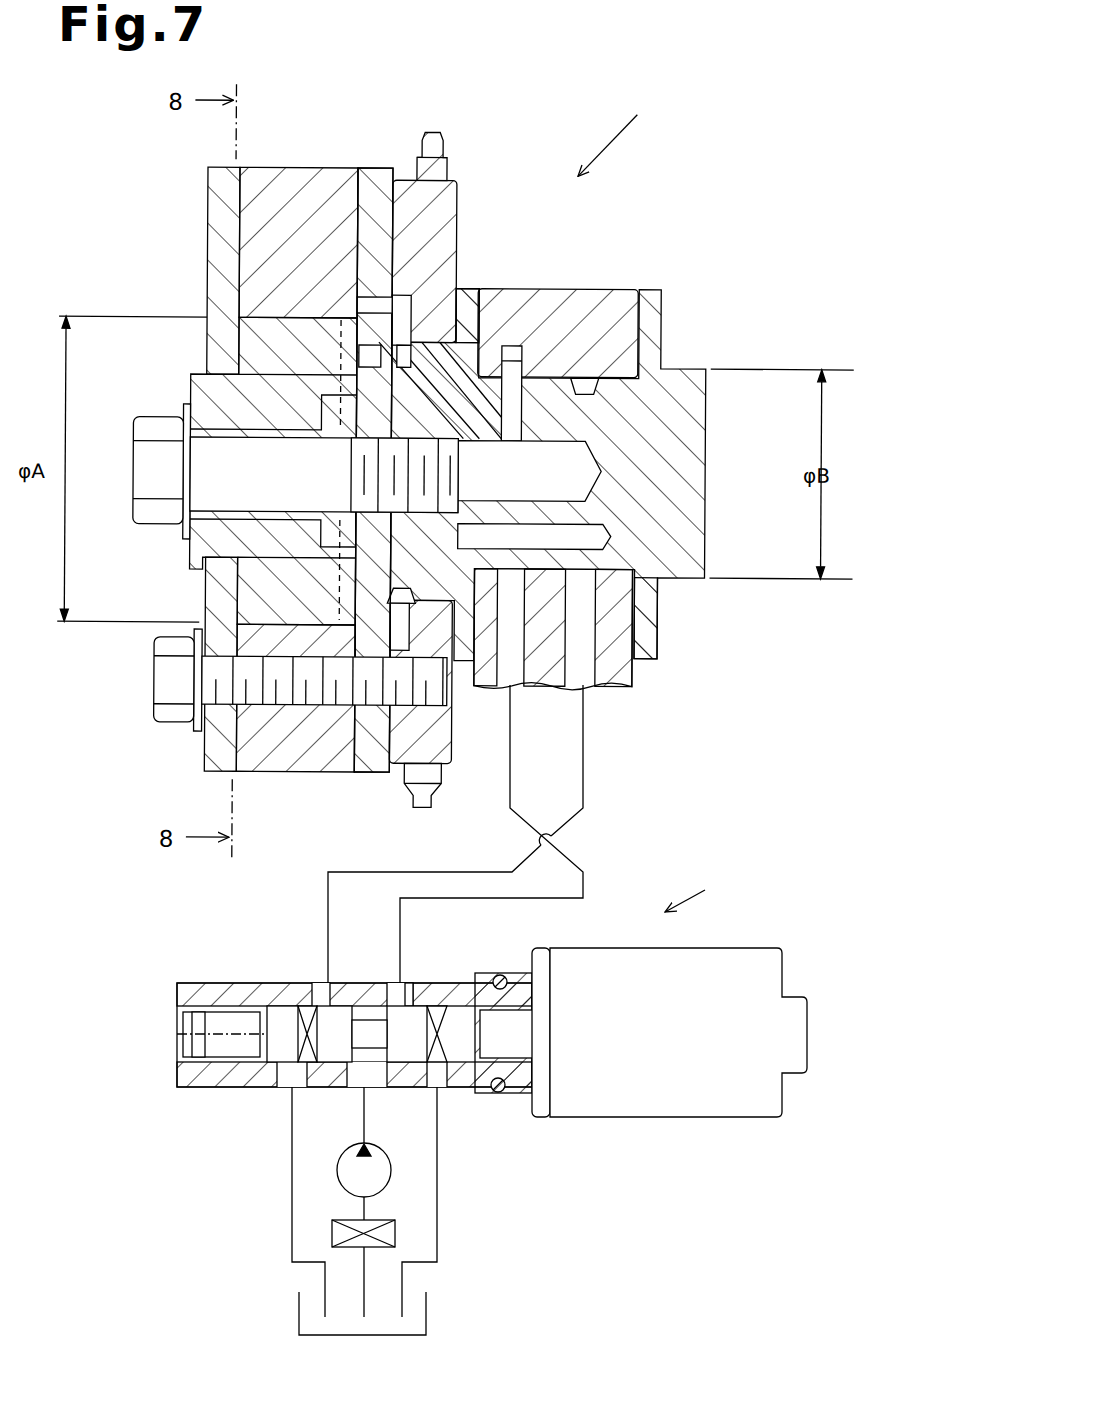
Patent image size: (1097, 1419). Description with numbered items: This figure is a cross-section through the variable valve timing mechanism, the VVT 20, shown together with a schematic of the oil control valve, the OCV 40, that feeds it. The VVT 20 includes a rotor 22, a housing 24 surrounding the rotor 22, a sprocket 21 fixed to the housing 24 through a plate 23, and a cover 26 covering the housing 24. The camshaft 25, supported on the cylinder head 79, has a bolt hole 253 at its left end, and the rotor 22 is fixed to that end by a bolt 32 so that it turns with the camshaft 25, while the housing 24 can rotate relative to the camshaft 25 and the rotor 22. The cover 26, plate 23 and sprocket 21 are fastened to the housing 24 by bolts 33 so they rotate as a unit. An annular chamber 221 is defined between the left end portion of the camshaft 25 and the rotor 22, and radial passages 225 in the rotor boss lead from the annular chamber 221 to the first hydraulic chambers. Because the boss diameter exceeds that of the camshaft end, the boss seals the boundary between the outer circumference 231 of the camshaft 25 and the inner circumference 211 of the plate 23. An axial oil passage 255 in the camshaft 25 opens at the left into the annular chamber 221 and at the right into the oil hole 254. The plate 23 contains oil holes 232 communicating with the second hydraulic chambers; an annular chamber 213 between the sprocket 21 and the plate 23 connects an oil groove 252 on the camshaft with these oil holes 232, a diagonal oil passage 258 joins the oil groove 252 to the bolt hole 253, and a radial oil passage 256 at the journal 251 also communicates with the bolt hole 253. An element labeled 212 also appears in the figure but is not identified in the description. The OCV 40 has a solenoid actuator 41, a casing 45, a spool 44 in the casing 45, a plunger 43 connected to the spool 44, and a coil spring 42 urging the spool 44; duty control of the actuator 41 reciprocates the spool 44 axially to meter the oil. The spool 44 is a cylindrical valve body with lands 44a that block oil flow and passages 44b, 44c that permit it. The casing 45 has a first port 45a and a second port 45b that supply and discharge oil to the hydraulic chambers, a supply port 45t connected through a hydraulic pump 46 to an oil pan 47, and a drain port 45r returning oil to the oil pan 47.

The VVT 20 is at (686, 118).
The sprocket 21 is at (458, 190).
The inner circumference of the plate 211 is at (425, 595).
The projection 212 is at (445, 135).
The annular chamber 213 is at (430, 300).
The rotor 22 is at (192, 555).
The annular chamber 221 is at (320, 420).
The passages 225 is at (340, 355).
The plate 23 is at (375, 168).
The outer circumference of the camshaft 231 is at (368, 367).
The oil holes 232 is at (362, 297).
The housing 24 is at (308, 168).
The camshaft 25 is at (707, 375).
The journal 251 is at (545, 378).
The oil groove 252 is at (462, 292).
The bolt hole 253 is at (410, 438).
The oil hole 254 is at (642, 598).
The oil passage 255 is at (490, 546).
The radial oil passage 256 is at (525, 410).
The oil passage 258 is at (513, 345).
The cover 26 is at (208, 200).
The bolt 32 is at (135, 480).
The bolts 33 is at (157, 690).
The cylinder head 79 is at (637, 672).
The OCV 40 is at (704, 889).
The solenoid actuator 41 is at (681, 1047).
The coil spring 42 is at (222, 1012).
The plunger 43 is at (525, 1093).
The spool 44 is at (268, 1010).
The lands 44a is at (335, 1006).
The passage 44b is at (398, 983).
The passage 44c is at (305, 1010).
The casing 45 is at (470, 980).
The first port 45a is at (318, 983).
The second port 45b is at (412, 983).
The drain port 45r is at (292, 1090).
The supply port 45t is at (362, 1090).
The hydraulic pump 46 is at (386, 1152).
The oil pan 47 is at (430, 1315).